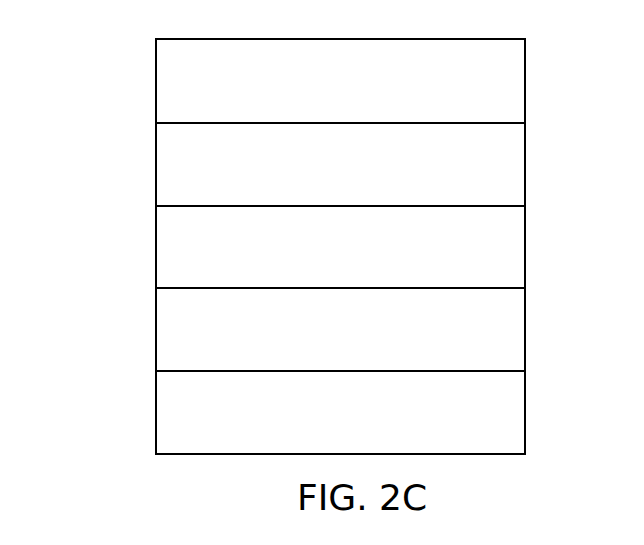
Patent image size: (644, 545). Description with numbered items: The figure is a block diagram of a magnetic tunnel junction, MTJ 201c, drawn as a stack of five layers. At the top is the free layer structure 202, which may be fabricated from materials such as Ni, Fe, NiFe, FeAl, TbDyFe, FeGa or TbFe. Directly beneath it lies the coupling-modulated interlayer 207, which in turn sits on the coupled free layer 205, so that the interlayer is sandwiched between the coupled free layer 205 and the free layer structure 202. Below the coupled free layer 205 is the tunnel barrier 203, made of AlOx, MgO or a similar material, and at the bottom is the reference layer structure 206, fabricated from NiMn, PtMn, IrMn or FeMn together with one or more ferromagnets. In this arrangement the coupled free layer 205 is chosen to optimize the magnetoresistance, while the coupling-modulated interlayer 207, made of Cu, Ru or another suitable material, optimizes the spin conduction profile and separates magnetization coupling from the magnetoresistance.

The magnetic tunnel junction 201c is at (100, 72).
The free layer structure 202 is at (525, 81).
The coupling-modulated interlayer 207 is at (525, 163).
The coupled free layer 205 is at (525, 245).
The tunnel barrier 203 is at (525, 327).
The reference layer structure 206 is at (525, 411).